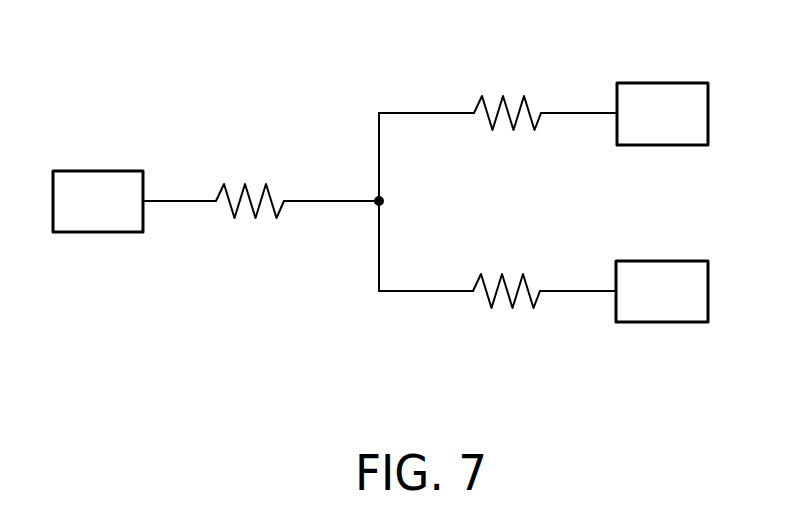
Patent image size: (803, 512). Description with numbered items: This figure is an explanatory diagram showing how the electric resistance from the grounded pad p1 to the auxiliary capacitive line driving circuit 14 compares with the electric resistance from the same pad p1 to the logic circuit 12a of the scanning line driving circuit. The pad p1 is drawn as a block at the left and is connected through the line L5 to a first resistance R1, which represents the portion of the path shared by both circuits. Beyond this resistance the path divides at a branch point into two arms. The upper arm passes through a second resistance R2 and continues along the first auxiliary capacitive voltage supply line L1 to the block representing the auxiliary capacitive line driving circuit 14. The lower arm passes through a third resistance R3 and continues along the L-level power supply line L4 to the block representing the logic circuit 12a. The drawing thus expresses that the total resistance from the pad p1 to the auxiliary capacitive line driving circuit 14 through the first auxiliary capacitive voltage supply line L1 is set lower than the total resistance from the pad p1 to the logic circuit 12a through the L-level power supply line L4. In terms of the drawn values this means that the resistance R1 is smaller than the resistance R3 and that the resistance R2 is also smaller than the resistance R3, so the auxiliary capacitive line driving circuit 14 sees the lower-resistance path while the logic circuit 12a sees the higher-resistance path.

The pad p1 is at (97, 232).
The auxiliary capacitive line driving circuit 14 is at (663, 83).
The logic circuit 12a is at (662, 322).
The electric resistance value R1 is at (250, 184).
The electric resistance value R2 is at (507, 98).
The electric resistance value R3 is at (506, 277).
The line L5 is at (184, 201).
The first auxiliary capacitive voltage supply line L1 is at (575, 113).
The L-level power supply line L4 is at (573, 291).